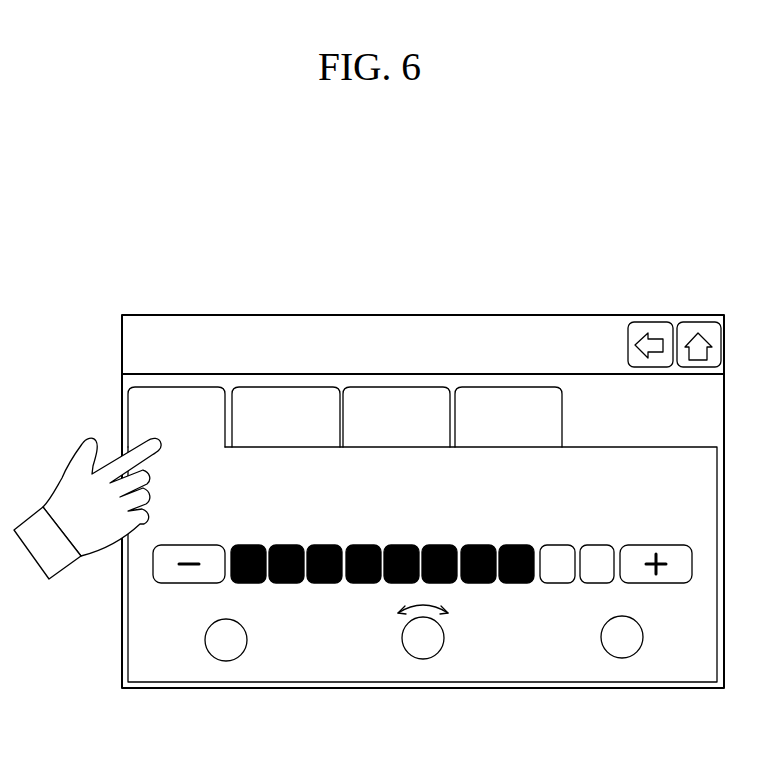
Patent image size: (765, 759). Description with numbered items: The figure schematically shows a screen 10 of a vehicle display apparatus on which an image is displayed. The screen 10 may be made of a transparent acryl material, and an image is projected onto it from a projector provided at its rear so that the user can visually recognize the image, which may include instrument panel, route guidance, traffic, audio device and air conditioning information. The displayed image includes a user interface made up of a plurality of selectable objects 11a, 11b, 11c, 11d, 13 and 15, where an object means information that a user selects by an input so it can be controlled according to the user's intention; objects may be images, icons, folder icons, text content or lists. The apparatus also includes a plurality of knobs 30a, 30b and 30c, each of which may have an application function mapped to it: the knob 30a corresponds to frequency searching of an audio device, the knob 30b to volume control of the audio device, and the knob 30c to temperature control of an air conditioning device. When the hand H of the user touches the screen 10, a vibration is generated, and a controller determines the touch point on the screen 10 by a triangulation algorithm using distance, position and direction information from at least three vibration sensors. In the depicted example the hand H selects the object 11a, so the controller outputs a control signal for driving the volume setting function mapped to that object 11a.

The screen 10 is at (534, 315).
The selectable object 11a is at (137, 413).
The selectable object 11b is at (284, 400).
The selectable object 11c is at (400, 400).
The selectable object 11d is at (505, 398).
The selectable object 13 is at (653, 368).
The selectable object 15 is at (703, 368).
The knob 30a is at (226, 661).
The knob 30b is at (423, 659).
The knob 30c is at (622, 658).
The hand H is at (100, 525).